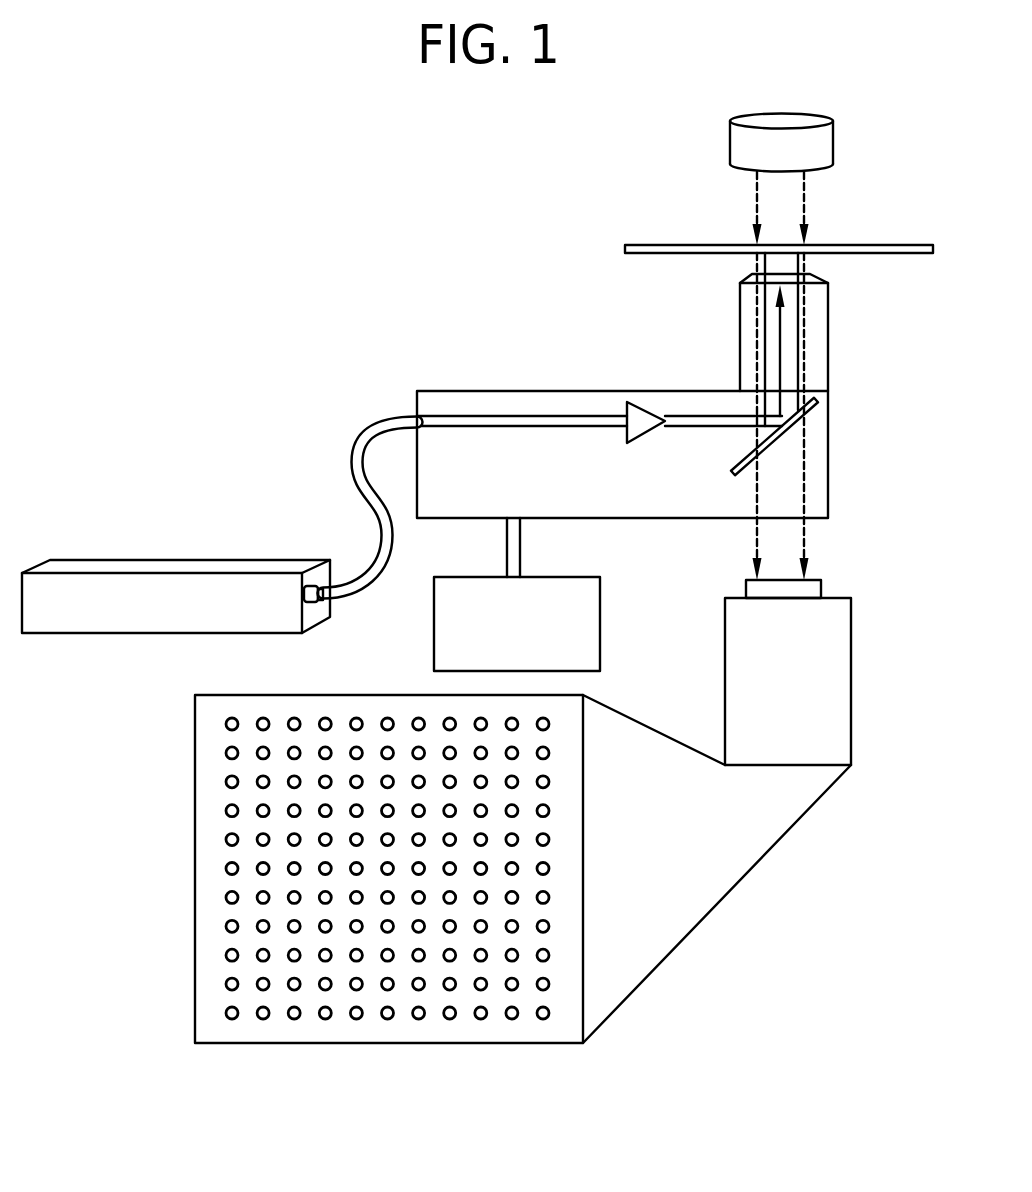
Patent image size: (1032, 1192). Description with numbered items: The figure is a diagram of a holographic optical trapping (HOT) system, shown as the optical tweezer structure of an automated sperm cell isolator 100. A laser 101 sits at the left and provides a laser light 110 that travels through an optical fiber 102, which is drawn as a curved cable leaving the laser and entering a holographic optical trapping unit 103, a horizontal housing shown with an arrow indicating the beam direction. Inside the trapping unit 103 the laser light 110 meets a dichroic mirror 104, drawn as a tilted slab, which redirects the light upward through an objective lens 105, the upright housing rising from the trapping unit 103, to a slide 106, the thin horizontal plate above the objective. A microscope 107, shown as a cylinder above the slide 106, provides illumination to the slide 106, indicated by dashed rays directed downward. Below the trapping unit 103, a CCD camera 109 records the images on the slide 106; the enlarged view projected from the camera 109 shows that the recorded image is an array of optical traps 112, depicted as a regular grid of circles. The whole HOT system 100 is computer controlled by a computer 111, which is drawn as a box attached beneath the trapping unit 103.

The automated sperm cell isolator 100 is at (455, 256).
The laser 101 is at (153, 558).
The optical fiber 102 is at (370, 432).
The holographic optical trapping unit 103 is at (442, 391).
The dichroic mirror 104 is at (778, 442).
The objective lens 105 is at (740, 331).
The slide 106 is at (680, 244).
The microscope 107 is at (730, 141).
The CCD camera 109 is at (851, 707).
The laser light 110 is at (782, 370).
The computer 111 is at (600, 627).
The array of optical traps 112 is at (195, 883).